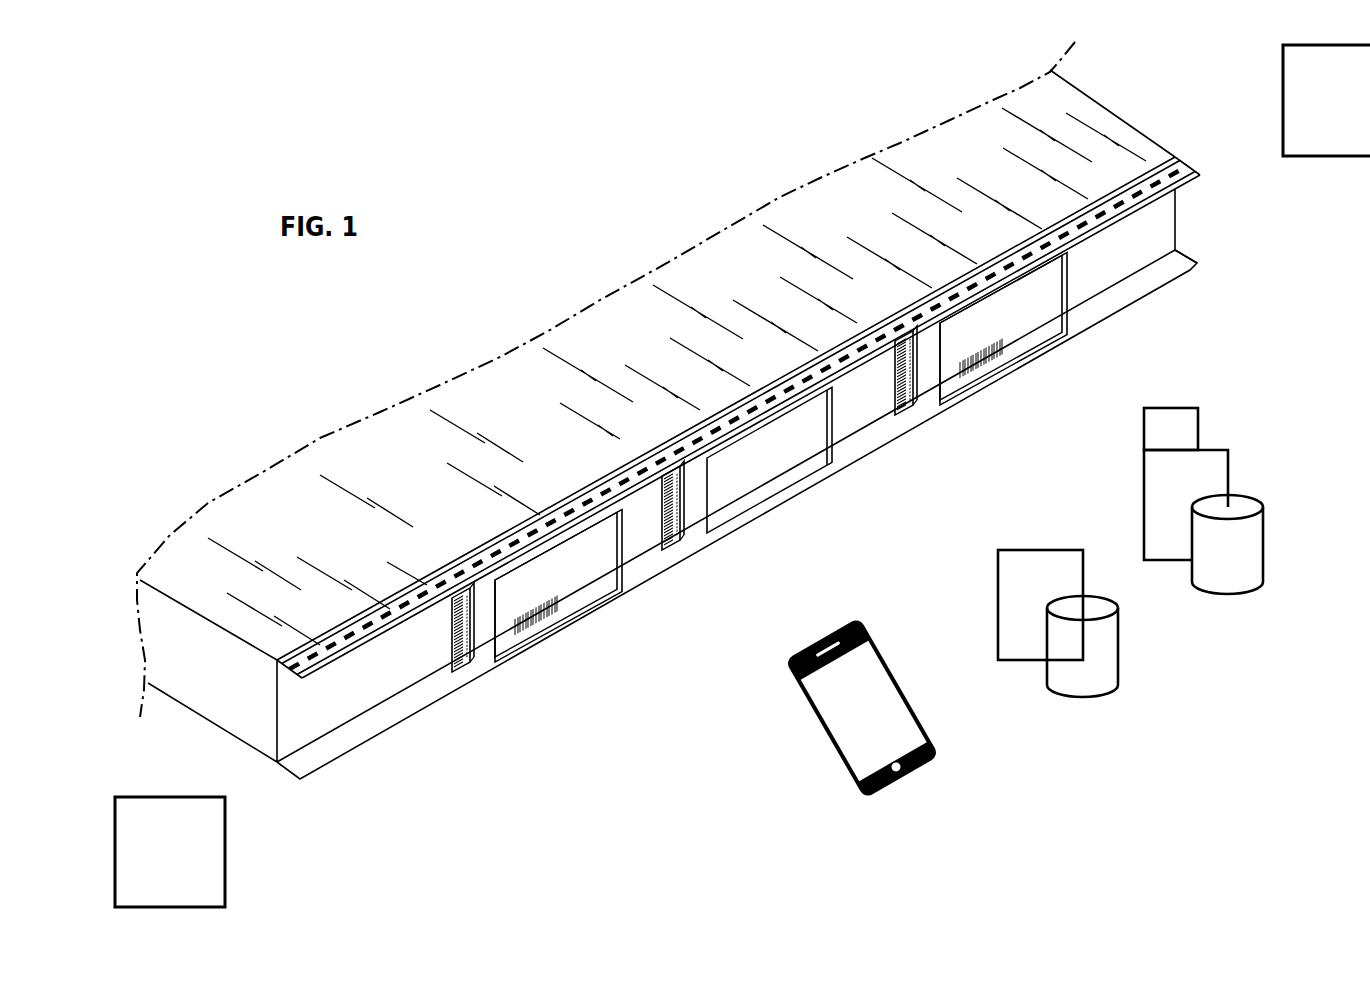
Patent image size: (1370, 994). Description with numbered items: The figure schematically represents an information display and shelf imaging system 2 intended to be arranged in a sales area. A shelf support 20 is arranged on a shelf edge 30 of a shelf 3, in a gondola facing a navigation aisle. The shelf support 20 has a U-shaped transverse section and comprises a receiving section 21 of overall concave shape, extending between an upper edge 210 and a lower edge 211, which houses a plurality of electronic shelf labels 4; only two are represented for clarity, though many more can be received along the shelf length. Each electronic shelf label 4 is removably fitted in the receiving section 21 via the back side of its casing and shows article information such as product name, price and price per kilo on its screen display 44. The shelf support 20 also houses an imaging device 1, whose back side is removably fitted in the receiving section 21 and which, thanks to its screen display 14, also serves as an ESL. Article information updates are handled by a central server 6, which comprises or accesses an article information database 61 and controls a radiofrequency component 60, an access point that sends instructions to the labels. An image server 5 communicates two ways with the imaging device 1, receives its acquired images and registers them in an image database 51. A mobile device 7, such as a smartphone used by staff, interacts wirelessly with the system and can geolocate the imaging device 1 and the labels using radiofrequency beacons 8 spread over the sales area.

The imaging device 1 is at (695, 512).
The information display and shelf imaging system 2 is at (569, 199).
The shelf 3 is at (728, 284).
The electronic shelf label 4 is at (483, 630).
The image server 5 is at (1047, 599).
The central server 6 is at (1194, 499).
The mobile device 7 is at (869, 716).
The radiofrequency beacon 8 is at (742, 476).
The screen display 14 is at (763, 468).
The shelf support 20 is at (1150, 270).
The receiving section 21 is at (1110, 252).
The shelf edge 30 is at (212, 686).
The screen display 44 is at (1000, 335).
The image database 51 is at (1095, 661).
The radiofrequency component 60 is at (1186, 441).
The article information database 61 is at (1241, 561).
The upper edge 210 is at (942, 312).
The lower edge 211 is at (663, 584).